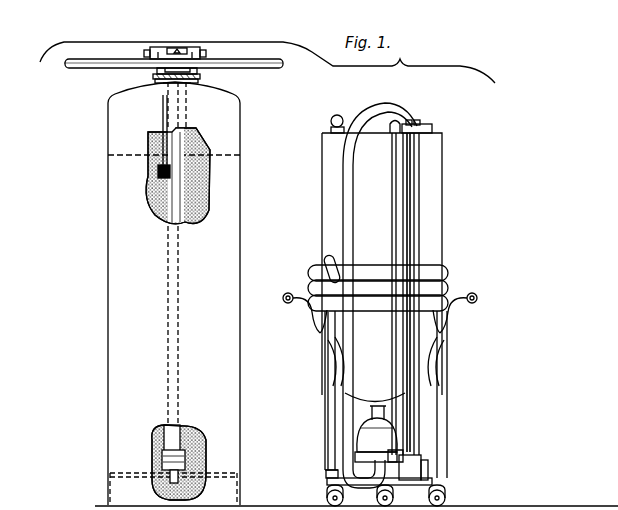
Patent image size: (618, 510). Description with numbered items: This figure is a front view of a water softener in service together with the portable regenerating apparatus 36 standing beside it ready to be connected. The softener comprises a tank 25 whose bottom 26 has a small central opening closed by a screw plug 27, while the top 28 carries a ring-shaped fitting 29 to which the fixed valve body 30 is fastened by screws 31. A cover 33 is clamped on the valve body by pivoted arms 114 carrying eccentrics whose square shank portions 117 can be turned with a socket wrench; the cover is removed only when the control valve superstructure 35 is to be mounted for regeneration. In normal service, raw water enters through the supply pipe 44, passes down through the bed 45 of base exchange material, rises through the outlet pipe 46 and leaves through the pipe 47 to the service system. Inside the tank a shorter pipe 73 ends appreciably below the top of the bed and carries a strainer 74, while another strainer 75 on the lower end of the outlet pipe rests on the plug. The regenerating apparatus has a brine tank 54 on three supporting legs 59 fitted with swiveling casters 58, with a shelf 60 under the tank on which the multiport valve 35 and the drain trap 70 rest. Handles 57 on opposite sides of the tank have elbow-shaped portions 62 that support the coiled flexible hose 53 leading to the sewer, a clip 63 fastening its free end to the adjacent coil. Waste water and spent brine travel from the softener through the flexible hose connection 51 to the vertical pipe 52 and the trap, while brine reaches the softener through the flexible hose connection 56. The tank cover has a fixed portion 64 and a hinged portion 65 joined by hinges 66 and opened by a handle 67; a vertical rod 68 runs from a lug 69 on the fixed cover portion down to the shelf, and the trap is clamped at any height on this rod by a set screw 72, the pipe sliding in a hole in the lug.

The tank 25 is at (238, 369).
The bottom 26 is at (217, 479).
The screw plug 27 is at (170, 483).
The top 28 is at (192, 86).
The ring-shaped fitting 29 is at (192, 76).
The fixed valve body 30 is at (165, 63).
The screws 31 is at (179, 50).
The cover 33 is at (170, 47).
The control valve superstructure 35 is at (310, 438).
The portable regenerating apparatus 36 is at (443, 233).
The supply pipe 44 is at (84, 69).
The bed of base exchange material 45 is at (206, 182).
The outlet pipe 46 is at (178, 210).
The pipe 47 is at (262, 69).
The flexible hose connection 51 is at (352, 248).
The vertical pipe 52 is at (414, 196).
The flexible hose 53 is at (449, 280).
The brine tank 54 is at (436, 258).
The flexible hose connection 56 is at (394, 354).
The handles 57 is at (480, 297).
The casters 58 is at (445, 497).
The supporting legs 59 is at (330, 402).
The shelf 60 is at (329, 479).
The elbow-shaped portions 62 is at (313, 316).
The clip 63 is at (330, 258).
The fixed cover portion 64 is at (434, 130).
The hinged cover portion 65 is at (357, 128).
The hinges 66 is at (382, 136).
The handle 67 is at (331, 119).
The vertical rod 68 is at (409, 168).
The lug 69 is at (418, 121).
The drain trap 70 is at (418, 475).
The set screw 72 is at (410, 453).
The pipe 73 is at (161, 135).
The strainer 74 is at (152, 175).
The strainer 75 is at (158, 457).
The arms 114 is at (156, 46).
The square shank portions 117 is at (202, 52).